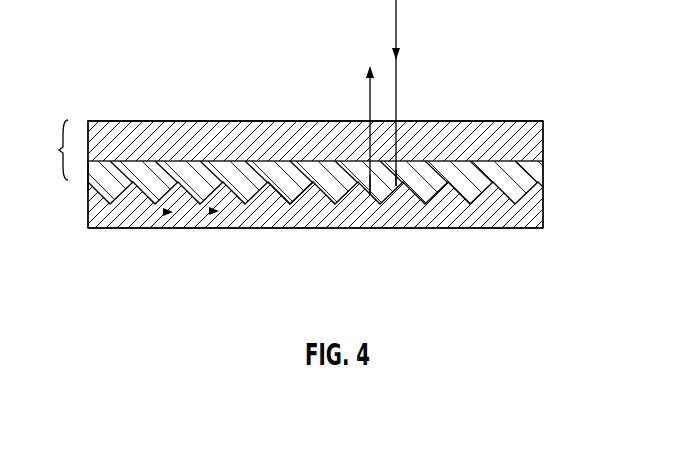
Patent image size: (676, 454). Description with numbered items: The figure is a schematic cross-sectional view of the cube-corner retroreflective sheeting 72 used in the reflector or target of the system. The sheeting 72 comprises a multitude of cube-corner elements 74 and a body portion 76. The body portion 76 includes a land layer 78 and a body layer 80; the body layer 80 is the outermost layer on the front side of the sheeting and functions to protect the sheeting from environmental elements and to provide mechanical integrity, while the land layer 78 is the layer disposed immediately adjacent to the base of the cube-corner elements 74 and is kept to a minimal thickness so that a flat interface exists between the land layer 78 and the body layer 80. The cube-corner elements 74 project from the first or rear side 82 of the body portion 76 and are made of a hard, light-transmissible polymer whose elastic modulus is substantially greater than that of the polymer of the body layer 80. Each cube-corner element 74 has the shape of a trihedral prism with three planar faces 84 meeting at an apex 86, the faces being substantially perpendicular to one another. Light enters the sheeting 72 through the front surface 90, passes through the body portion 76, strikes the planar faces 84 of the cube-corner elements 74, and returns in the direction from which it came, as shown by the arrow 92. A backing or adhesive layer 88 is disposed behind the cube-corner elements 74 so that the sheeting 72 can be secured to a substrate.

The retroreflective sheeting 72 is at (519, 52).
The cube-corner elements 74 is at (214, 213).
The body portion 76 is at (50, 150).
The land layer 78 is at (558, 176).
The body layer 80 is at (236, 121).
The rear side of body portion 82 is at (96, 178).
The planar faces 84 is at (317, 204).
The apex 86 is at (412, 224).
The backing or adhesive layer 88 is at (543, 223).
The front surface 90 is at (163, 121).
The arrow 92 is at (395, 30).